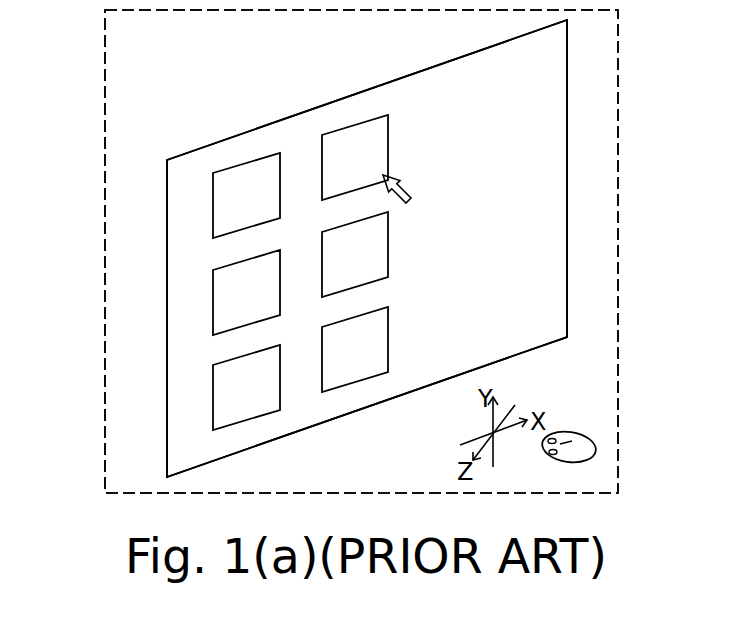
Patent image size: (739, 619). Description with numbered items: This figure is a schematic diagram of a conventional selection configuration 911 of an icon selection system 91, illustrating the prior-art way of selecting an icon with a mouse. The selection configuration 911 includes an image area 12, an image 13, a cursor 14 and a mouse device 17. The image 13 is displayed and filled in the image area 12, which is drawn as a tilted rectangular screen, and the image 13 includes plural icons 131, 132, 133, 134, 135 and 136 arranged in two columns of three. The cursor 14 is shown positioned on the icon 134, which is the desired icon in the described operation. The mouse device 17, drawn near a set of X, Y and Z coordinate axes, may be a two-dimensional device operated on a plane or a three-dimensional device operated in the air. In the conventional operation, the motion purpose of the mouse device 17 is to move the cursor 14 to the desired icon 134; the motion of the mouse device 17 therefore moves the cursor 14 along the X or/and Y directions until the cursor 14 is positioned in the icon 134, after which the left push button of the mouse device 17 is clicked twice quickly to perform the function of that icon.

The icon selection system 91 is at (88, 112).
The selection configuration 911 is at (105, 220).
The image area 12 is at (567, 93).
The image 13 is at (457, 83).
The icon 131 is at (243, 173).
The icon 132 is at (213, 295).
The icon 133 is at (213, 391).
The icon 134 is at (350, 127).
The icon 135 is at (388, 233).
The icon 136 is at (388, 328).
The cursor 14 is at (388, 178).
The mouse device 17 is at (581, 441).